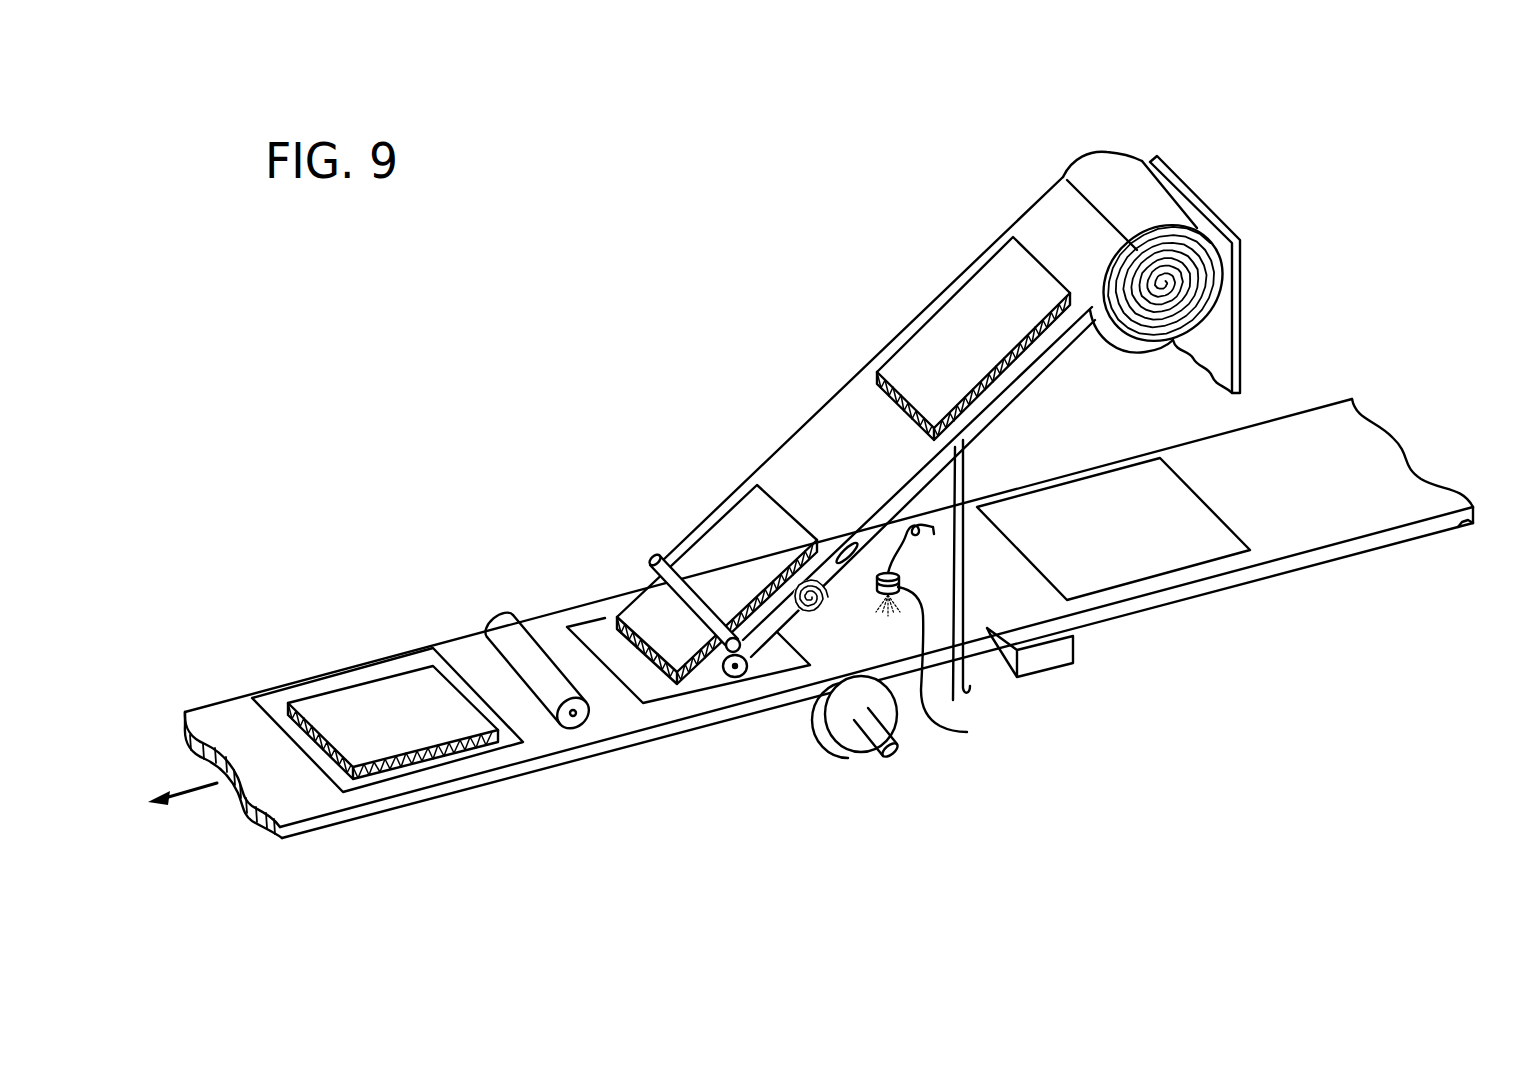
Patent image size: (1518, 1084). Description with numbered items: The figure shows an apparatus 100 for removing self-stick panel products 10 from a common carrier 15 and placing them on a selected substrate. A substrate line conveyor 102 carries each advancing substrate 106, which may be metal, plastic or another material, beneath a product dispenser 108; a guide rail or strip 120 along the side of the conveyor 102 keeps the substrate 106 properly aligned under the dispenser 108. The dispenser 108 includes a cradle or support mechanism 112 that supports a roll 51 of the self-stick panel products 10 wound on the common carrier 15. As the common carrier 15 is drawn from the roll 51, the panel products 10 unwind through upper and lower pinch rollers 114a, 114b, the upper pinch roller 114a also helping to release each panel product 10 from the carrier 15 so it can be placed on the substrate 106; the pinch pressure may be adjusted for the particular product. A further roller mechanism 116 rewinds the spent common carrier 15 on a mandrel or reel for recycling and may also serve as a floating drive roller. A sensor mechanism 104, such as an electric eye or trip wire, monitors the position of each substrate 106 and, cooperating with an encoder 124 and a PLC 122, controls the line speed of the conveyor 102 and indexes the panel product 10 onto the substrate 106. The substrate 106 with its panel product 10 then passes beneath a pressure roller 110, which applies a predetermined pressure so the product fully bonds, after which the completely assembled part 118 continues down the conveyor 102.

The self-stick panel product 10 is at (953, 325).
The common carrier 15 is at (848, 407).
The roll 51 is at (1094, 172).
The apparatus 100 is at (560, 332).
The substrate line conveyor 102 is at (1310, 440).
The sensor mechanism 104 is at (945, 635).
The substrate 106 is at (1127, 503).
The product dispenser 108 is at (735, 472).
The pressure roller 110 is at (505, 631).
The cradle or support mechanism 112 is at (1240, 262).
The upper pinch roller 114a is at (656, 562).
The lower pinch roller 114b is at (740, 678).
The further roller mechanism 116 is at (862, 556).
The completely assembled part 118 is at (365, 700).
The guide rail or strip 120 is at (588, 612).
The PLC 122 is at (1053, 660).
The encoder 124 is at (843, 742).